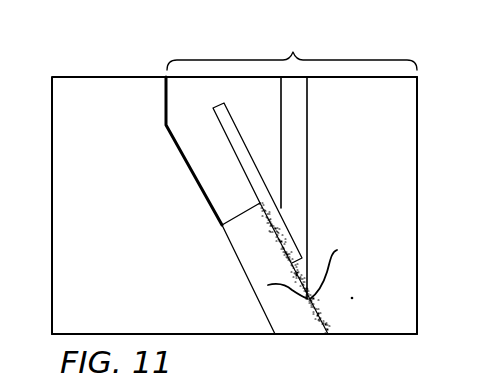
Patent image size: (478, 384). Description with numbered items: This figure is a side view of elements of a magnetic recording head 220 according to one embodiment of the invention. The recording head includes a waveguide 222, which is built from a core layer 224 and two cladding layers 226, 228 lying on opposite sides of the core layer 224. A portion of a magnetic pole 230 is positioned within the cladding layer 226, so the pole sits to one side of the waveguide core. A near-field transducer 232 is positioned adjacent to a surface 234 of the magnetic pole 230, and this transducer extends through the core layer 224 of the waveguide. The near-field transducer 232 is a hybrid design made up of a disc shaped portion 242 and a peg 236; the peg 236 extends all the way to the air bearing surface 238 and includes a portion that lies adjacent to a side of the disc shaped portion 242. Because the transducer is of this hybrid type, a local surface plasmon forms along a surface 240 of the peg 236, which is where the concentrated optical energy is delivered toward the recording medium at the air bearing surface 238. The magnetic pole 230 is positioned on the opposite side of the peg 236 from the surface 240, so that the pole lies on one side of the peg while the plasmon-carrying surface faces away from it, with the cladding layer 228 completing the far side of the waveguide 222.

The magnetic recording head 220 is at (386, 52).
The waveguide 222 is at (292, 48).
The core layer 224 is at (298, 114).
The cladding layer 226 is at (182, 92).
The cladding layer 228 is at (403, 200).
The magnetic pole 230 is at (83, 93).
The near-field transducer 232 is at (295, 205).
The surface of the magnetic pole 234 is at (209, 204).
The peg 236 is at (238, 262).
The air bearing surface 238 is at (357, 334).
The surface of the peg 240 is at (320, 315).
The disc shaped portion 242 is at (232, 139).